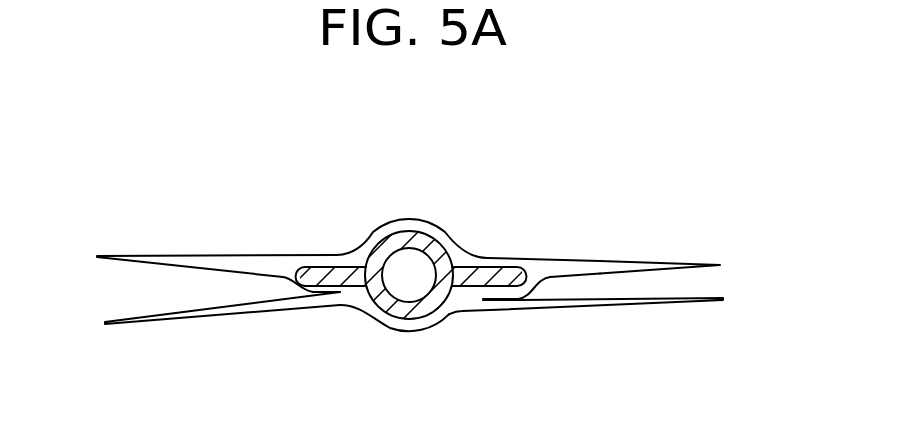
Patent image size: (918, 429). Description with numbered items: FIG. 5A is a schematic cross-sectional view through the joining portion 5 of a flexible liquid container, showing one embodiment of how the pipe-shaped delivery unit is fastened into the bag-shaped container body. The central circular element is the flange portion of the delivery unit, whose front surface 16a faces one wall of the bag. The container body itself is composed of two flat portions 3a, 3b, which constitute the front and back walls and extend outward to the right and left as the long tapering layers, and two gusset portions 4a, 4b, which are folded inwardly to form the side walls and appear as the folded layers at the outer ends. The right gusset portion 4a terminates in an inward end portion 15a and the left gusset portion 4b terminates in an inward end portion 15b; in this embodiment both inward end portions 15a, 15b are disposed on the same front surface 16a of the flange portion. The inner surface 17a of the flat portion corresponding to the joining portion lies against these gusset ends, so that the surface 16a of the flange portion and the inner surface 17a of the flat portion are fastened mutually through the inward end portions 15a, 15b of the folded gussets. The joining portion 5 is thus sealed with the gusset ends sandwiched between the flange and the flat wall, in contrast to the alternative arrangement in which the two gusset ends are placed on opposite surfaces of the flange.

The joining portion 5 is at (375, 182).
The front surface of the flange portion 16a is at (484, 291).
The flat portion 3b is at (607, 258).
The flat portion 3a is at (620, 310).
The right gusset portion 4a is at (703, 284).
The left gusset portion 4b is at (158, 313).
The inward end portion of the right gusset portion 15a is at (493, 305).
The inward end portion of the left gusset portion 15b is at (340, 300).
The inner surface of the flat portion 17a is at (472, 312).